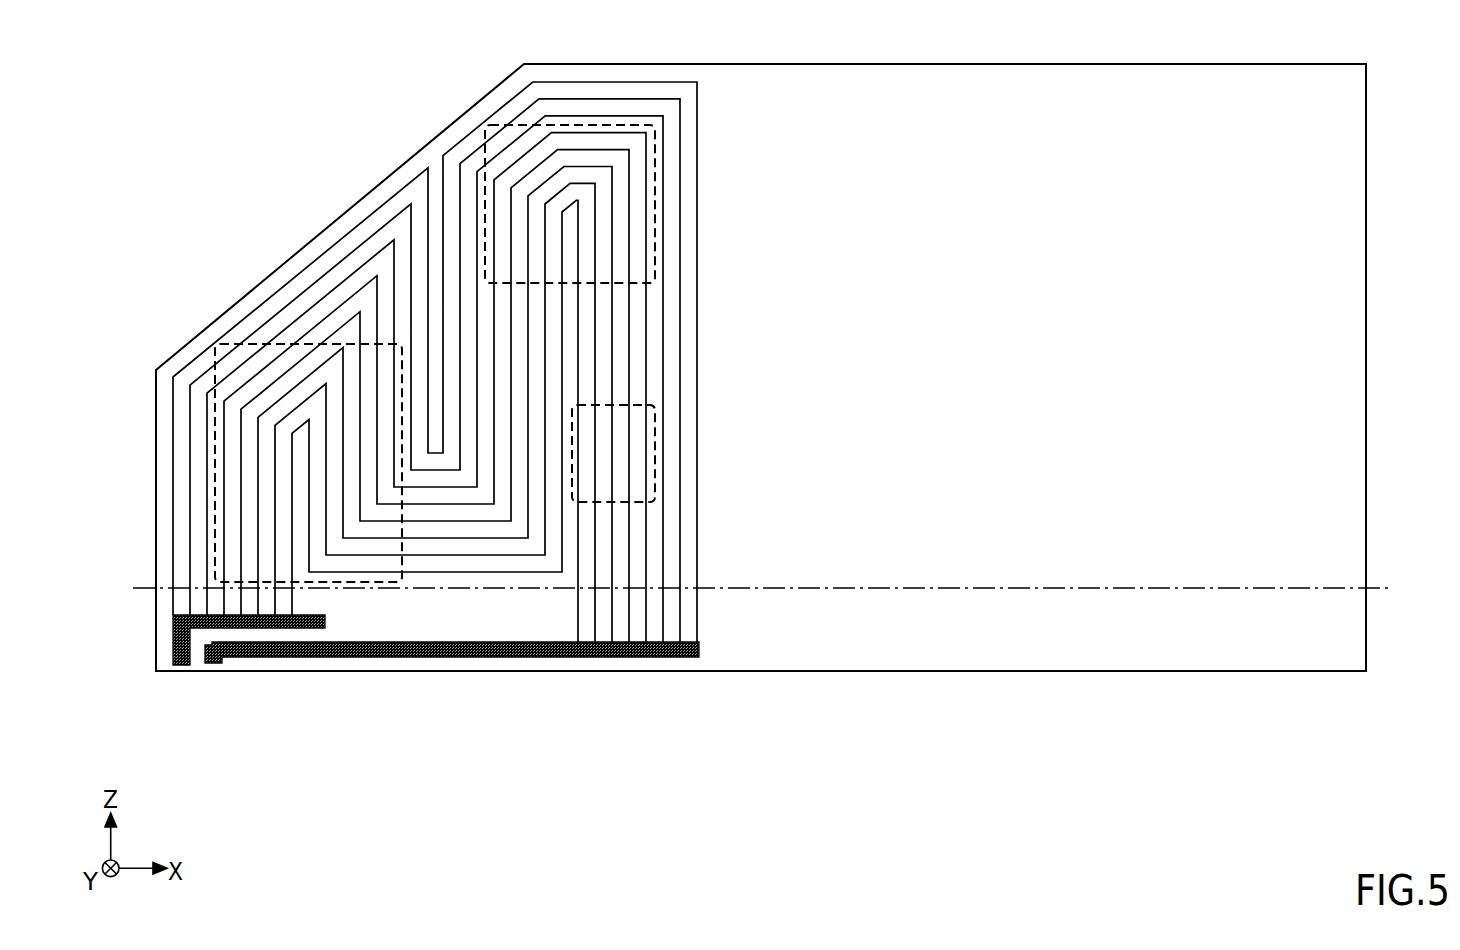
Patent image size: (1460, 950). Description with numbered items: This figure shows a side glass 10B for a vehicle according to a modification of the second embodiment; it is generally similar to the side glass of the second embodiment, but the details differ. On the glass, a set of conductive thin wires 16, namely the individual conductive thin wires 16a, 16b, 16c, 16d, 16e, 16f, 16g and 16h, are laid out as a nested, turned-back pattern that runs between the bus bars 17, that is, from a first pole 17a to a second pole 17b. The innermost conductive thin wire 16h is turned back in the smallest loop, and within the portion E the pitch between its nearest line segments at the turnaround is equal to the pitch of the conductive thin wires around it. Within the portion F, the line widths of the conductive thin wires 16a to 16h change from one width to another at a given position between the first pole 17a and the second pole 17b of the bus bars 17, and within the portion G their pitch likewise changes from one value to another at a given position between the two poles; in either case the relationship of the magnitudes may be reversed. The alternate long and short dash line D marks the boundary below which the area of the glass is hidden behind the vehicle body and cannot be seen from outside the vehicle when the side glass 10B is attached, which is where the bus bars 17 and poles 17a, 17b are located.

The side glass 10B is at (160, 107).
The conductive thin wires 16 is at (407, 445).
The conductive thin wire 16a is at (173, 602).
The conductive thin wire 16b is at (190, 602).
The conductive thin wire 16c is at (207, 602).
The conductive thin wire 16d is at (224, 602).
The conductive thin wire 16e is at (241, 602).
The conductive thin wire 16f is at (258, 602).
The conductive thin wire 16g is at (275, 602).
The conductive thin wire 16h is at (433, 483).
The bus bars 17 is at (436, 712).
The first pole 17a is at (308, 628).
The second pole 17b is at (420, 652).
The alternate long and short dash line D is at (950, 592).
The portion E is at (518, 120).
The portion F is at (257, 342).
The portion G is at (655, 452).